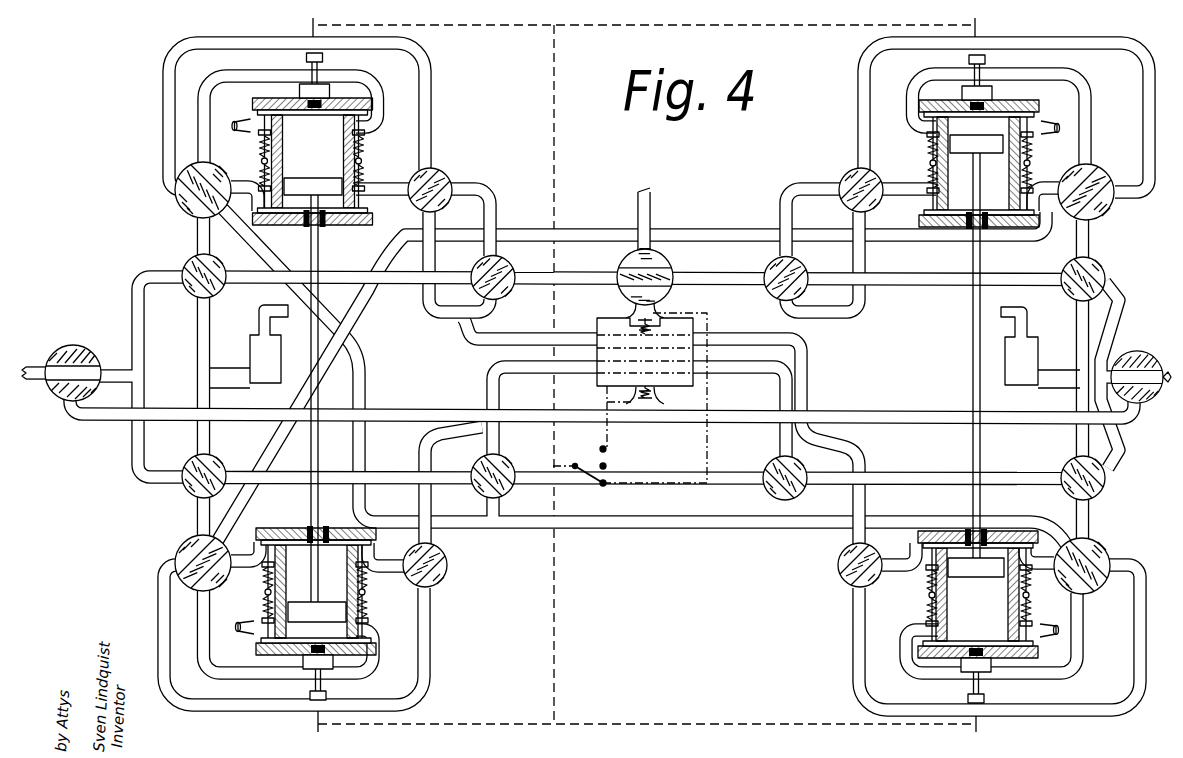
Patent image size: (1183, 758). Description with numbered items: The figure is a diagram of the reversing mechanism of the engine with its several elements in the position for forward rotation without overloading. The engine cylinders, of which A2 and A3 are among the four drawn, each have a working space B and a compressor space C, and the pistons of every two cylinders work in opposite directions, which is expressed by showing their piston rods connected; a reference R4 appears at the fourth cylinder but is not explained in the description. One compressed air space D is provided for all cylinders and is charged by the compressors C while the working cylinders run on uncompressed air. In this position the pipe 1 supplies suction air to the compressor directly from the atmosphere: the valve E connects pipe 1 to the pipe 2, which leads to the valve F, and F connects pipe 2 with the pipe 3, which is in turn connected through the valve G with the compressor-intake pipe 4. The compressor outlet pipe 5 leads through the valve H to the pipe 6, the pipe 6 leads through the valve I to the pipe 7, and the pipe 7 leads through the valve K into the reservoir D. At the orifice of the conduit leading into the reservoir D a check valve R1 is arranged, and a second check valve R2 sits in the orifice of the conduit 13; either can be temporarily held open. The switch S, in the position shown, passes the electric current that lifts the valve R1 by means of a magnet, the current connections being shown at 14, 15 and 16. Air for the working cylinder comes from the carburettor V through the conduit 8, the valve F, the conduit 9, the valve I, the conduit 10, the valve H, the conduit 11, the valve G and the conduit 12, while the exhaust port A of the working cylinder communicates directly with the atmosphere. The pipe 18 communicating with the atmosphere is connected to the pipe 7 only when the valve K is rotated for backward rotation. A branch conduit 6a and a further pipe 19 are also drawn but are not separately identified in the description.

The pipe 1 is at (40, 366).
The pipe 2 is at (132, 353).
The pipe 3 is at (195, 242).
The compressor-intake pipe 4 is at (1041, 580).
The compressor outlet pipe 5 is at (393, 190).
The pipe 6 is at (433, 262).
The pipe 6a is at (515, 330).
The pipe 7 is at (572, 280).
The conduit 8 is at (220, 362).
The conduit 9 is at (340, 271).
The conduit 10 is at (493, 213).
The conduit 11 is at (165, 85).
The conduit 12 is at (1082, 652).
The conduit 13 is at (657, 312).
The current connection 14 is at (612, 440).
The current connection 15 is at (647, 483).
The current connection 16 is at (554, 604).
The pipe 18 is at (652, 207).
The pipe 19 is at (655, 516).
The exhaust port A is at (640, 384).
The engine cylinder A2 is at (915, 148).
The engine cylinder A3 is at (370, 598).
The spring R4 is at (918, 595).
The working space B is at (646, 378).
The compressor space C is at (629, 379).
The compressed air space D is at (603, 318).
The valve E is at (78, 345).
The valve F is at (226, 254).
The valve G is at (1105, 545).
The valve H is at (845, 590).
The valve I is at (510, 272).
The valve K is at (668, 268).
The check valve R1 is at (365, 130).
The check valve R2 is at (650, 385).
The switch S is at (580, 481).
The carburettor V is at (665, 346).